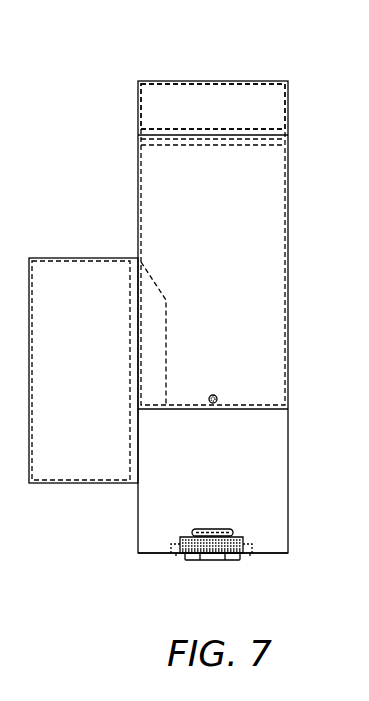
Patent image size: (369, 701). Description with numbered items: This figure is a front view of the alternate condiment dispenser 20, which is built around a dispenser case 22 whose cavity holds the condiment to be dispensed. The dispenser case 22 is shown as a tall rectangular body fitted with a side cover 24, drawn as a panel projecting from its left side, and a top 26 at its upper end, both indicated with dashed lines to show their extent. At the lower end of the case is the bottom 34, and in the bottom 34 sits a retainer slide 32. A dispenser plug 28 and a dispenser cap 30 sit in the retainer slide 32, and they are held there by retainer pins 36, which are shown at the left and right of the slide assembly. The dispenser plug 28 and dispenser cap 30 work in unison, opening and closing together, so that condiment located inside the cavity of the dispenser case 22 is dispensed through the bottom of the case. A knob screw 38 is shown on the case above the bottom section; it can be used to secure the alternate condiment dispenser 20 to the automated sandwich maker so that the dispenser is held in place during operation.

The alternate condiment dispenser 20 is at (111, 112).
The dispenser case 22 is at (273, 264).
The side cover 24 is at (27, 283).
The top 26 is at (281, 91).
The dispenser plug 28 is at (226, 530).
The dispenser cap 30 is at (201, 561).
The retainer slide 32 is at (252, 549).
The bottom 34 is at (280, 554).
The retainer pins 36 is at (178, 556).
The knob screw 38 is at (215, 395).